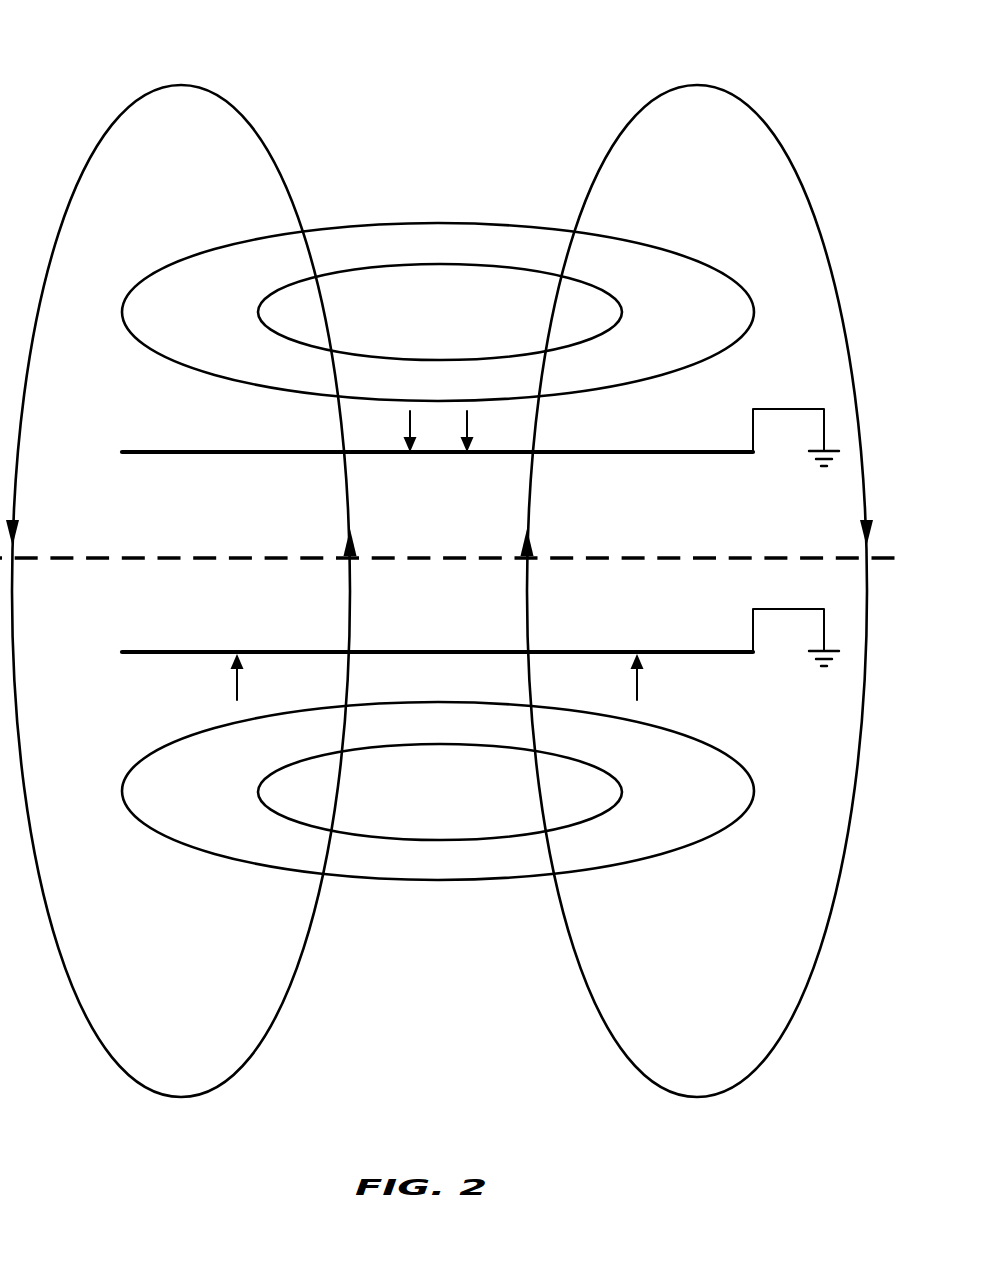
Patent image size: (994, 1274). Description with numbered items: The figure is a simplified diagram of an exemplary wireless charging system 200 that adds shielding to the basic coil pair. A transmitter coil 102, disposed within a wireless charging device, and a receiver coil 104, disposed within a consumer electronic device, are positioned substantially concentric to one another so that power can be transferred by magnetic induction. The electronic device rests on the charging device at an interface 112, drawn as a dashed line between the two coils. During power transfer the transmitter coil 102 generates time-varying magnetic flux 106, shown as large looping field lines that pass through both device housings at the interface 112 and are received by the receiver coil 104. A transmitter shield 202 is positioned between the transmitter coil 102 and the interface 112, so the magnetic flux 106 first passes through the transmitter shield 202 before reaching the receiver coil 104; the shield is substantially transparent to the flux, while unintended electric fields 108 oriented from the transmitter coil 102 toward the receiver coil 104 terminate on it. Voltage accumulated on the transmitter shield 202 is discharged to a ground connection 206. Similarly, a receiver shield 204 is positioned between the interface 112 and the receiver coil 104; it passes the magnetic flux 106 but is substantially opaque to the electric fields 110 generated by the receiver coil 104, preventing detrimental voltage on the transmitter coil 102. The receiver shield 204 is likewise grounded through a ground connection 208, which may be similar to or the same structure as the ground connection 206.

The wireless charging system 200 is at (151, 50).
The transmitter coil 102 is at (462, 882).
The receiver coil 104 is at (397, 223).
The magnetic flux 106 is at (300, 975).
The electric fields 108 is at (237, 707).
The electric fields 110 is at (410, 424).
The interface 112 is at (140, 557).
The transmitter shield 202 is at (297, 651).
The receiver shield 204 is at (297, 453).
The ground connection 206 is at (811, 667).
The ground connection 208 is at (811, 466).